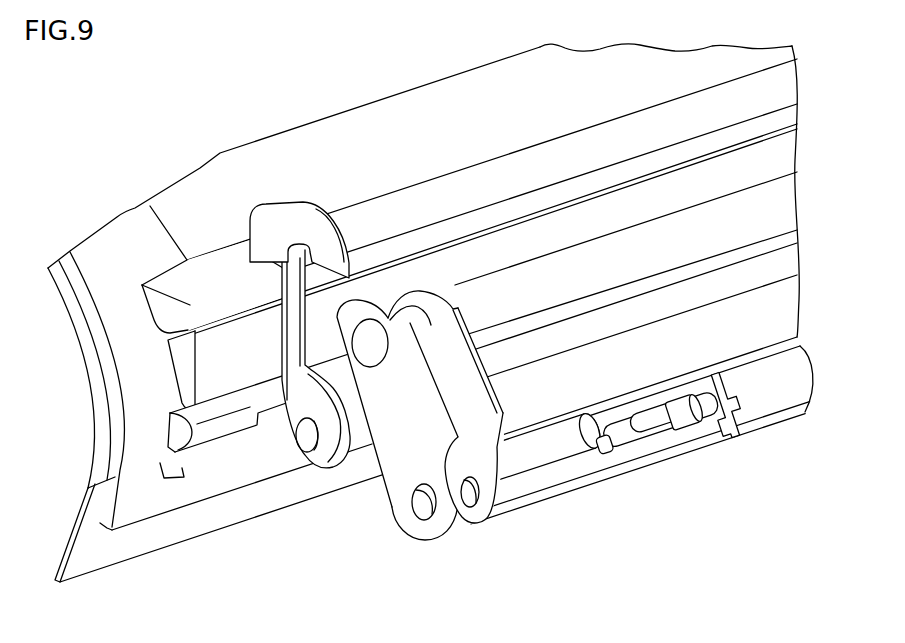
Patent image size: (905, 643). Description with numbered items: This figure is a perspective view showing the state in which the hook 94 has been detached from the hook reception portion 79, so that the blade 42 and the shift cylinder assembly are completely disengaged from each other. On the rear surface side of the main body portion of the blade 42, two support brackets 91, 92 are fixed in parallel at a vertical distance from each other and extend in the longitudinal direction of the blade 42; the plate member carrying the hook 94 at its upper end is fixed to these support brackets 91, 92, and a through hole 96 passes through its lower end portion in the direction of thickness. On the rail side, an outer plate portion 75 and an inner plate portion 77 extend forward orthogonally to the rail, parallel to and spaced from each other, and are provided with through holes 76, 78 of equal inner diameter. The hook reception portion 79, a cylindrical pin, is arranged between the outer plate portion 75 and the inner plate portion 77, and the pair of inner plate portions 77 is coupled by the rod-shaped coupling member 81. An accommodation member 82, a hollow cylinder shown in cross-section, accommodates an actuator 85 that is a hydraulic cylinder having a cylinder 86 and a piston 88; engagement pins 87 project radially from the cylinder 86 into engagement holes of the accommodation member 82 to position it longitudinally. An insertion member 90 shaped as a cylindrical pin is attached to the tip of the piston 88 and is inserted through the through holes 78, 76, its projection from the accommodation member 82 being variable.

The blade 42 is at (455, 98).
The outer plate portion 75 is at (420, 328).
The through hole 76 is at (427, 513).
The inner plate portion 77 is at (483, 493).
The through hole 78 is at (467, 497).
The hook reception portion 79 is at (402, 312).
The coupling member 81 is at (772, 208).
The accommodation member 82 is at (787, 357).
The actuator 85 is at (604, 456).
The cylinder 86 is at (675, 443).
The engagement pin 87 is at (740, 421).
The piston 88 is at (626, 441).
The insertion member 90 is at (557, 466).
The support bracket 91 is at (210, 278).
The support bracket 92 is at (222, 428).
The hook 94 is at (323, 218).
The through hole 96 is at (310, 452).